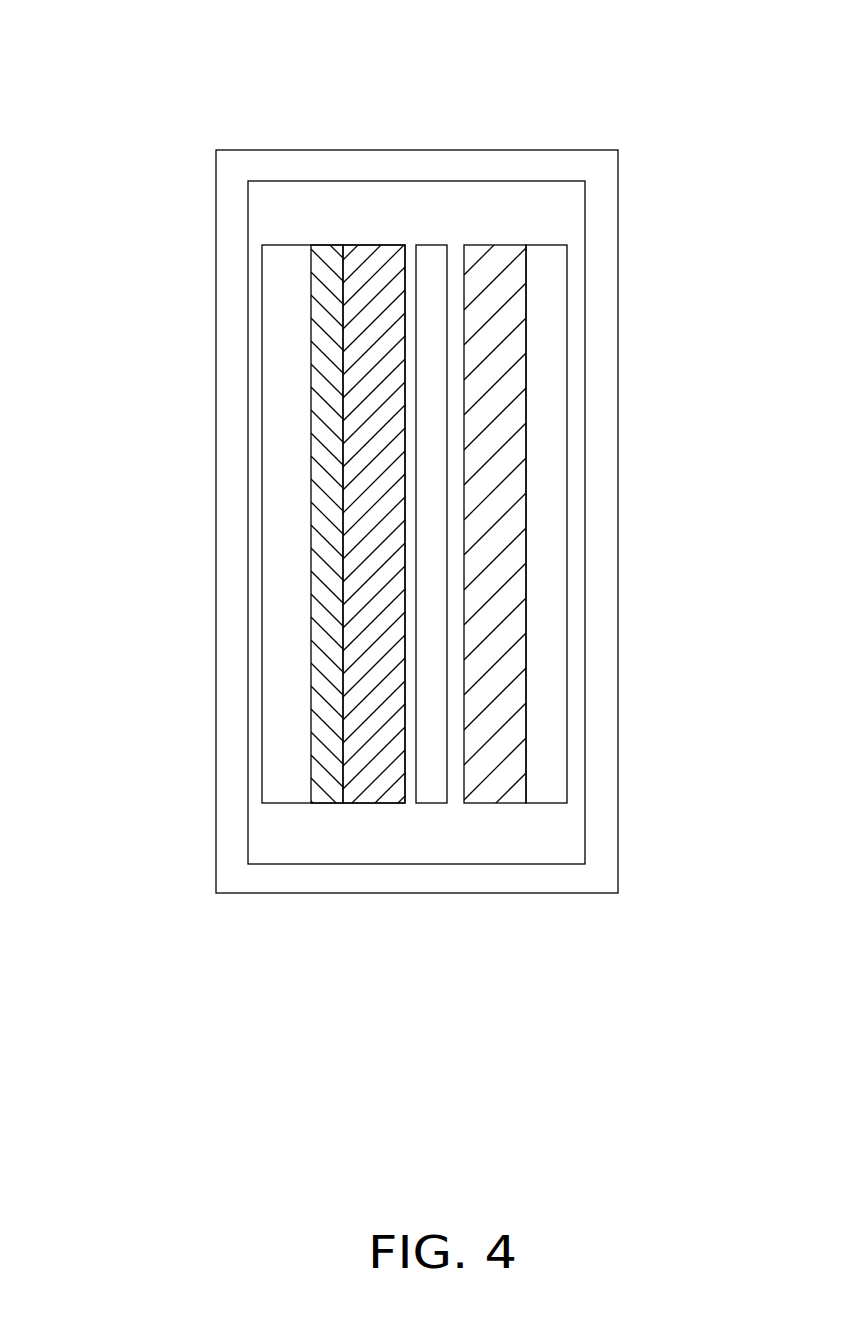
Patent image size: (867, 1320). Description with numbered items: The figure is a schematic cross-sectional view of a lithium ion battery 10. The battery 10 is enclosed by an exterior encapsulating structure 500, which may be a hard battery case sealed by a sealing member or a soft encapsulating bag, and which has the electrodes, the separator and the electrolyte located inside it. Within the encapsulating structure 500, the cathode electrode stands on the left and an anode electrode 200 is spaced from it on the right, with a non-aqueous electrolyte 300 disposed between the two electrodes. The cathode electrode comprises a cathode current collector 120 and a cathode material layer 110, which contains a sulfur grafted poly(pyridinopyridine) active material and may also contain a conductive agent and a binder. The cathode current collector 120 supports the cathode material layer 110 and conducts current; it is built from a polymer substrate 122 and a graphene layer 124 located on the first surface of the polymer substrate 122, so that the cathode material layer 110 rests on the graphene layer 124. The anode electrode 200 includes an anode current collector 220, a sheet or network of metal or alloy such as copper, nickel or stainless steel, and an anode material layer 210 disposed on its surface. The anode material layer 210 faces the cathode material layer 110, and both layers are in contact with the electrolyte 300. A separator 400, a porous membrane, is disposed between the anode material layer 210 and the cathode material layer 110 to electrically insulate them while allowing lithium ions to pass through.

The lithium ion battery 10 is at (385, 60).
The exterior encapsulating structure 500 is at (287, 165).
The non-aqueous electrolyte 300 is at (456, 806).
The separator 400 is at (432, 245).
The cathode material layer 110 is at (253, 567).
The cathode current collector 120 is at (227, 507).
The polymer substrate 122 is at (292, 709).
The graphene layer 124 is at (327, 766).
The anode electrode 200 is at (621, 524).
The anode material layer 210 is at (503, 262).
The anode current collector 220 is at (618, 524).